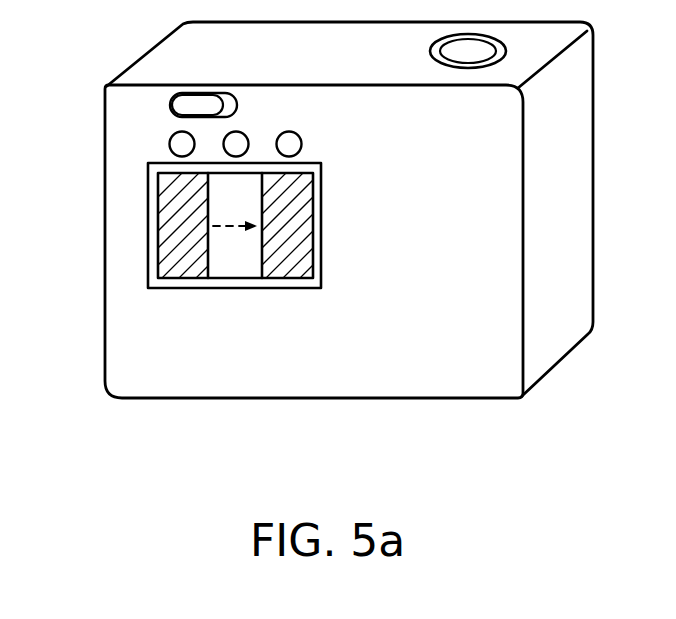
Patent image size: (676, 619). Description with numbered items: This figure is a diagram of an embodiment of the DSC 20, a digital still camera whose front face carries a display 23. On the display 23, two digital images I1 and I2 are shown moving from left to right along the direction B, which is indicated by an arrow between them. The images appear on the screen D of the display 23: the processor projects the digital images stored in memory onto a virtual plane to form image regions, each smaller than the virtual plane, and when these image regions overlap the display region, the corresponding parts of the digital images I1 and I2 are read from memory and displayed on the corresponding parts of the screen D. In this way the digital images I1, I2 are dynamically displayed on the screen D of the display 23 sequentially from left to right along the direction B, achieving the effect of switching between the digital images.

The DSC 20 is at (475, 385).
The display 23 is at (235, 288).
The screen D is at (158, 243).
The digital image I1 is at (297, 230).
The digital image I2 is at (193, 230).
The direction B is at (235, 213).